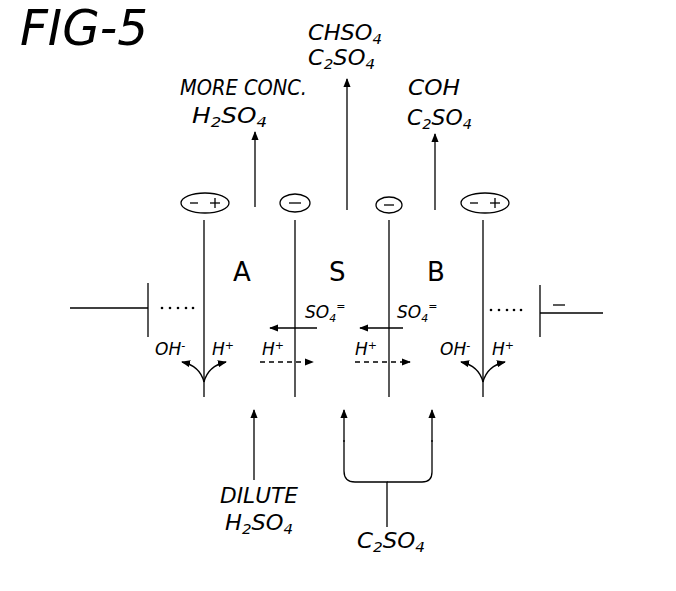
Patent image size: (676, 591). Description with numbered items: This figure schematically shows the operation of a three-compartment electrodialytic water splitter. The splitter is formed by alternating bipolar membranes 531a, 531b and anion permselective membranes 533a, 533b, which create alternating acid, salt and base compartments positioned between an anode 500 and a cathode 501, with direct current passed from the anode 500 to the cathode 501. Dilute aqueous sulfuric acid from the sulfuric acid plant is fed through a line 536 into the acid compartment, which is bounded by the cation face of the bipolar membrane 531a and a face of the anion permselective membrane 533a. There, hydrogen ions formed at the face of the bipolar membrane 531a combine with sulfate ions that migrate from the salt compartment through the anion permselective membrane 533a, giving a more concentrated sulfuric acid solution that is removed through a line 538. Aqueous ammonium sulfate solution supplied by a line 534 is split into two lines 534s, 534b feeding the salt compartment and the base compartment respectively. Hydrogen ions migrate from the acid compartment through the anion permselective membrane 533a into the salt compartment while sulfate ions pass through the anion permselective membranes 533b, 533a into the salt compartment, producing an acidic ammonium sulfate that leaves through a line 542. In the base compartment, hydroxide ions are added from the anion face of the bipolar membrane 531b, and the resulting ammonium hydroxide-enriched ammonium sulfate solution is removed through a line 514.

The anode 500 is at (148, 322).
The cathode 501 is at (540, 333).
The line 514 is at (435, 185).
The bipolar membrane 531a is at (204, 397).
The bipolar membrane 531b is at (483, 387).
The anion permselective membrane 533a is at (295, 387).
The anion permselective membrane 533b is at (415, 396).
The line 534 is at (387, 508).
The line 534s is at (378, 449).
The line 534b is at (432, 466).
The line 536 is at (288, 456).
The line 538 is at (255, 180).
The line 542 is at (375, 165).